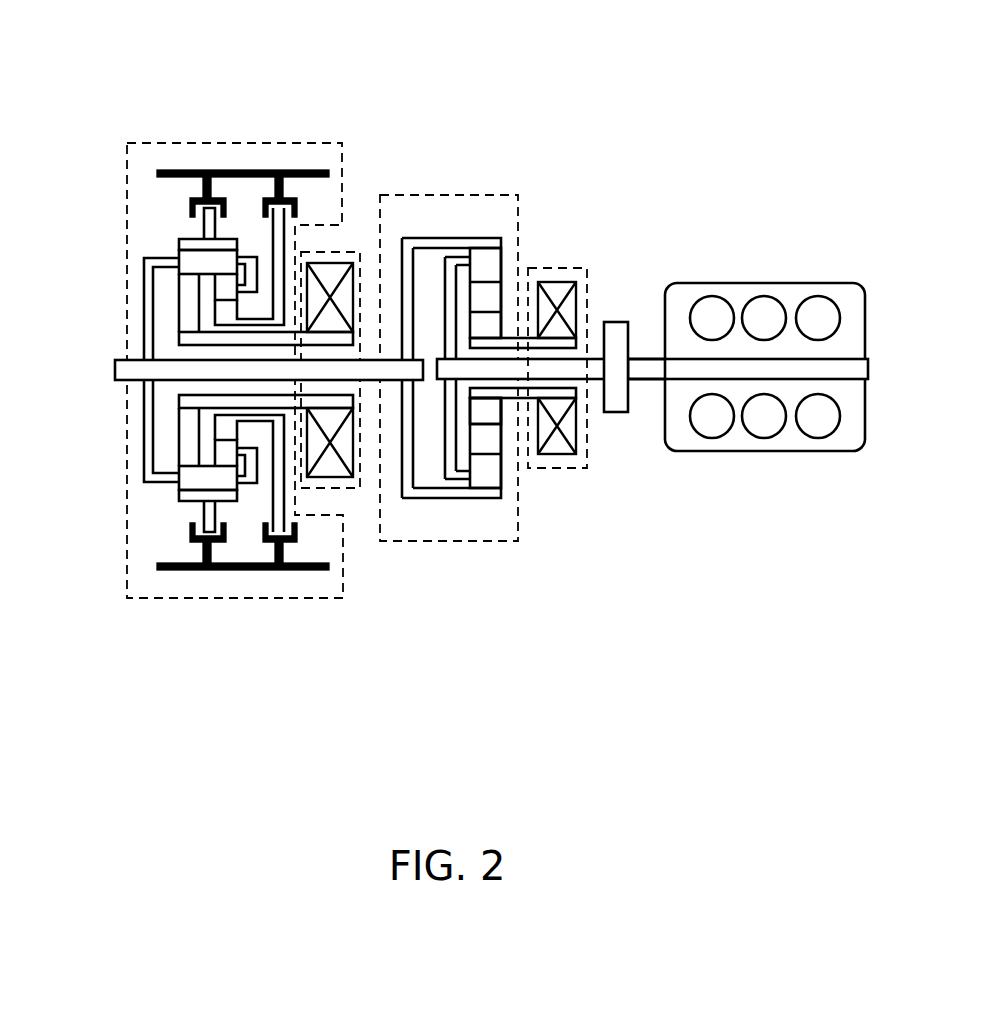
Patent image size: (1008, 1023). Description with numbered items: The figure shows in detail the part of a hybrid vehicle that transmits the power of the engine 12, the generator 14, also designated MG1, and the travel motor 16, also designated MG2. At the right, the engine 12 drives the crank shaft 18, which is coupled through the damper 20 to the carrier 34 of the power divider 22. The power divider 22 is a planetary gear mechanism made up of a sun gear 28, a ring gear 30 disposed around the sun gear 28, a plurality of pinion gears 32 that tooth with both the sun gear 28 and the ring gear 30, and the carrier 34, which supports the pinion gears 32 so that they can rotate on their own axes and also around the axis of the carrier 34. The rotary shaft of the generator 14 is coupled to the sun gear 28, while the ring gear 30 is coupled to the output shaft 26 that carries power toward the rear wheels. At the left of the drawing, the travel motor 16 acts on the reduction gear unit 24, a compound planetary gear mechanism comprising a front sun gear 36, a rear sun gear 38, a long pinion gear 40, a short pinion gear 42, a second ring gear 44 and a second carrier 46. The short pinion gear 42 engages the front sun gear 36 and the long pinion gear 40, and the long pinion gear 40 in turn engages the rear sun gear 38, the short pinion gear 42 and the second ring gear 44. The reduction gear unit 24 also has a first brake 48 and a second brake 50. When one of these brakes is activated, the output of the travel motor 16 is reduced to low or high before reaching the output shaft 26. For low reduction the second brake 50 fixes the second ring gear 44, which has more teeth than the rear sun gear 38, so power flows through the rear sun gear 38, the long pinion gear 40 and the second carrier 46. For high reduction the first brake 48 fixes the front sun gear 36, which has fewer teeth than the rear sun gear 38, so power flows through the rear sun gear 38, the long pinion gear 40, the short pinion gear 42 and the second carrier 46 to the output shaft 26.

The engine 12 is at (727, 285).
The generator 14 is at (573, 267).
The travel motor 16 is at (337, 250).
The crank shaft 18 is at (642, 357).
The damper 20 is at (615, 412).
The power divider 22 is at (467, 543).
The reduction gear unit 24 is at (243, 140).
The output shaft 26 is at (178, 368).
The sun gear 28 is at (492, 417).
The ring gear 30 is at (440, 498).
The pinion gears 32 is at (492, 263).
The carrier 34 is at (450, 445).
The front sun gear 36 is at (228, 310).
The rear sun gear 38 is at (187, 308).
The long pinion gear 40 is at (195, 263).
The short pinion gear 42 is at (225, 290).
The second ring gear 44 is at (185, 240).
The second carrier 46 is at (150, 290).
The first brake 48 is at (277, 546).
The second brake 50 is at (200, 545).
The generator MG1 is at (565, 468).
The travel motor MG2 is at (347, 488).